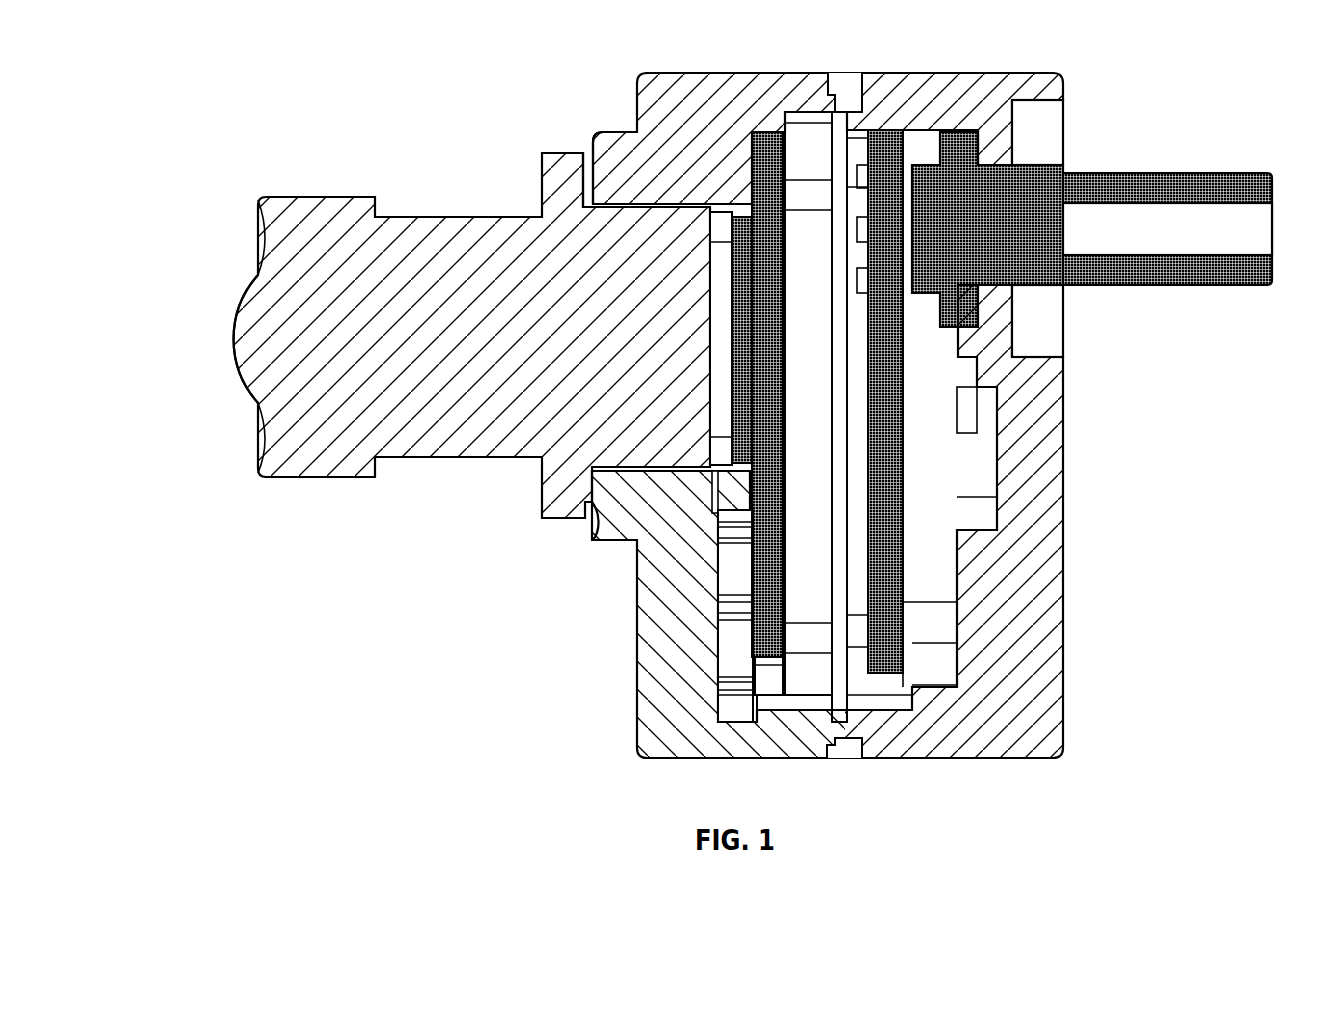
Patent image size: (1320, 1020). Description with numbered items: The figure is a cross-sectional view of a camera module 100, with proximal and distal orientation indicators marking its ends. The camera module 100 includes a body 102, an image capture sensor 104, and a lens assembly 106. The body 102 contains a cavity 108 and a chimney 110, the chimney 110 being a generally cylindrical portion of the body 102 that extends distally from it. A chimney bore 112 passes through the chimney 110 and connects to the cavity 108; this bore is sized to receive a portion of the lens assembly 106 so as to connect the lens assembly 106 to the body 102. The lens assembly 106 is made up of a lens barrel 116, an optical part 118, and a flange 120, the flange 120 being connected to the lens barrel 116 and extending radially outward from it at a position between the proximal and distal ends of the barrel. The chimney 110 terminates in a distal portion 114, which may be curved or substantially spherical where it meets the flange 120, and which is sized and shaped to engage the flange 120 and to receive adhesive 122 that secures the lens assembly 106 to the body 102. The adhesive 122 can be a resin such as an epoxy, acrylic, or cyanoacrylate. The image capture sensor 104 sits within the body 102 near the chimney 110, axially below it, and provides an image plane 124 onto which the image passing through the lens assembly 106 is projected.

The camera module 100 is at (210, 68).
The body 102 is at (818, 90).
The image capture sensor 104 is at (740, 390).
The lens assembly 106 is at (237, 218).
The cavity 108 is at (720, 200).
The chimney 110 is at (625, 140).
The chimney bore 112 is at (627, 198).
The distal portion 114 is at (593, 502).
The lens barrel 116 is at (430, 228).
The optical part 118 is at (222, 283).
The flange 120 is at (538, 165).
The adhesive 122 is at (583, 140).
The image plane 124 is at (725, 427).